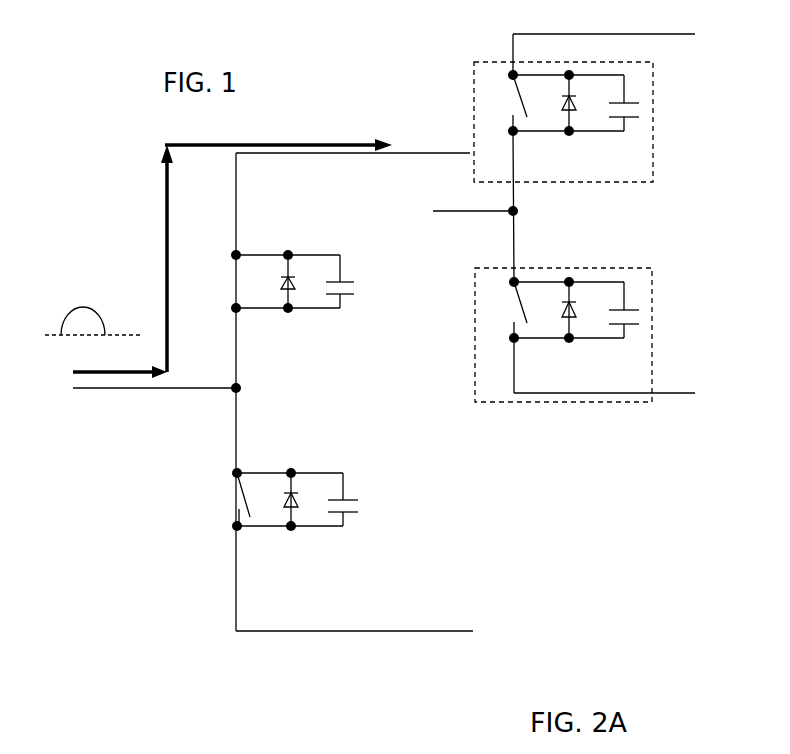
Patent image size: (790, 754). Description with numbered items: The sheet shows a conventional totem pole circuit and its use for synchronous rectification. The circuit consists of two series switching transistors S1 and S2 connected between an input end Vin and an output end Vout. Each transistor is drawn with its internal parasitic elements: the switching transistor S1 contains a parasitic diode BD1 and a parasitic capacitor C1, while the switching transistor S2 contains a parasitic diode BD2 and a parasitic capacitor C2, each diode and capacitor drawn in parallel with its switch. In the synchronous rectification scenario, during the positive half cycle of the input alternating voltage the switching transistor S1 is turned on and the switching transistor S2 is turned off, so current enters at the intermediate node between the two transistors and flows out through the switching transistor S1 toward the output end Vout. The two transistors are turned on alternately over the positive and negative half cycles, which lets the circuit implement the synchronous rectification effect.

In FIG. 1, the switching transistor S1 is at (220, 281).
In FIG. 2A, the switching transistor S1 is at (476, 103).
In FIG. 1, the switching transistor S2 is at (219, 499).
In FIG. 2A, the switching transistor S2 is at (477, 310).
In FIG. 1, the parasitic diode BD1 is at (286, 298).
In FIG. 2A, the parasitic diode BD1 is at (558, 119).
In FIG. 1, the parasitic diode BD2 is at (288, 512).
In FIG. 2A, the parasitic diode BD2 is at (564, 327).
In FIG. 1, the parasitic capacitor C1 is at (340, 300).
In FIG. 2A, the parasitic capacitor C1 is at (624, 121).
In FIG. 1, the parasitic capacitor C2 is at (343, 515).
In FIG. 2A, the parasitic capacitor C2 is at (624, 330).
In FIG. 1, the input end Vin is at (137, 378).
In FIG. 2A, the input end Vin is at (470, 226).
In FIG. 2A, the output end Vout is at (616, 103).